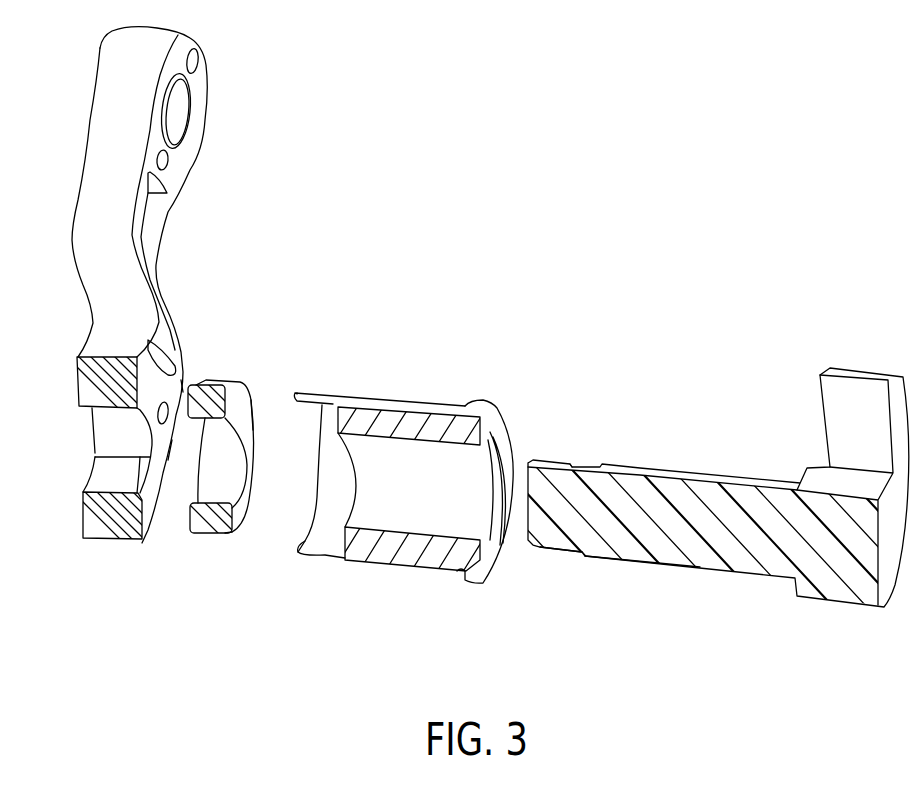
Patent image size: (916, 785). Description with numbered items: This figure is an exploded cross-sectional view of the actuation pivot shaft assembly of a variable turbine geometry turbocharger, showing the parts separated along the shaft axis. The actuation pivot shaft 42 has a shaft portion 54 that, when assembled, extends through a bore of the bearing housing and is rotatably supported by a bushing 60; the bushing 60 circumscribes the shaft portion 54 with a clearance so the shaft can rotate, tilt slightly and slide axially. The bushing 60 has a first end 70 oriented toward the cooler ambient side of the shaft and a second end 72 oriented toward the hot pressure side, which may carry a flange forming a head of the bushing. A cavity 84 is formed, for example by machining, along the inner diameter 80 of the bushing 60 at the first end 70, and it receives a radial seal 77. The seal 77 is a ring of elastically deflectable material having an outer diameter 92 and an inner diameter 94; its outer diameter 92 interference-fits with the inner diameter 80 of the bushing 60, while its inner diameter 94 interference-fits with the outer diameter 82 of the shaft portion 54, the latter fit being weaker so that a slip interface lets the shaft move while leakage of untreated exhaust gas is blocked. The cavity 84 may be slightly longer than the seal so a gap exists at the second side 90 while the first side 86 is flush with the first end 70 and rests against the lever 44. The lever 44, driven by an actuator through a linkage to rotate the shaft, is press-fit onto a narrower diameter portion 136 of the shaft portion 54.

The actuation pivot shaft 42 is at (680, 493).
The lever 44 is at (107, 277).
The shaft portion 54 is at (668, 553).
The bushing 60 is at (392, 417).
The first end 70 is at (319, 374).
The second end 72 is at (502, 386).
The radial seal 77 is at (240, 398).
The inner diameter 80 is at (397, 440).
The outer diameter 82 is at (568, 463).
The cavity 84 is at (302, 542).
The first side 86 is at (183, 387).
The second side 90 is at (235, 521).
The outer diameter 92 is at (208, 381).
The inner diameter 94 is at (205, 498).
The narrower diameter portion 136 is at (560, 548).